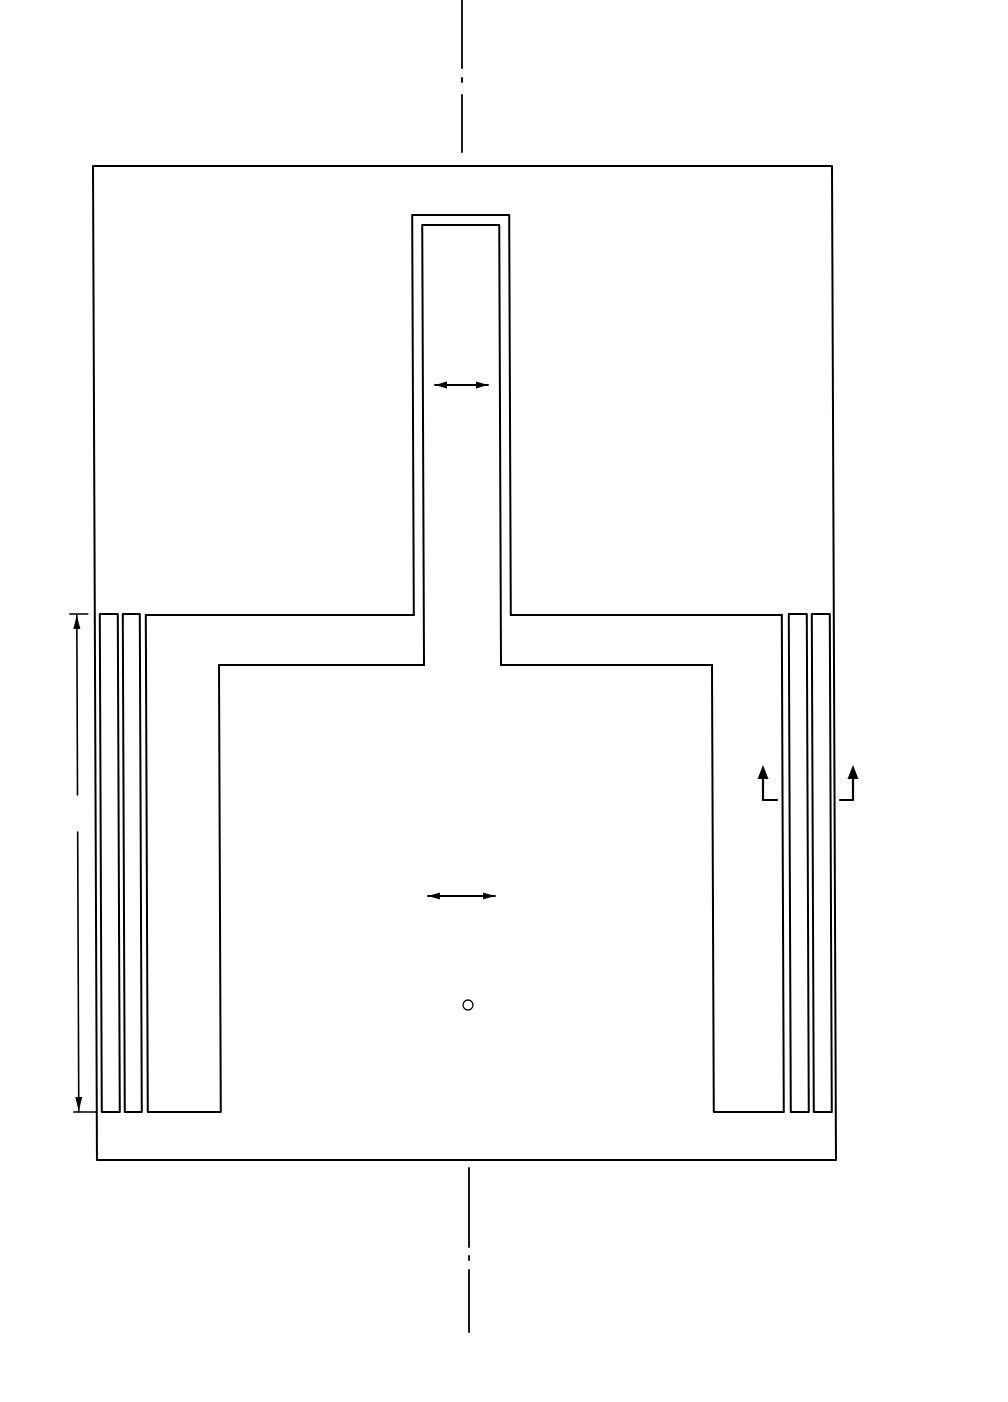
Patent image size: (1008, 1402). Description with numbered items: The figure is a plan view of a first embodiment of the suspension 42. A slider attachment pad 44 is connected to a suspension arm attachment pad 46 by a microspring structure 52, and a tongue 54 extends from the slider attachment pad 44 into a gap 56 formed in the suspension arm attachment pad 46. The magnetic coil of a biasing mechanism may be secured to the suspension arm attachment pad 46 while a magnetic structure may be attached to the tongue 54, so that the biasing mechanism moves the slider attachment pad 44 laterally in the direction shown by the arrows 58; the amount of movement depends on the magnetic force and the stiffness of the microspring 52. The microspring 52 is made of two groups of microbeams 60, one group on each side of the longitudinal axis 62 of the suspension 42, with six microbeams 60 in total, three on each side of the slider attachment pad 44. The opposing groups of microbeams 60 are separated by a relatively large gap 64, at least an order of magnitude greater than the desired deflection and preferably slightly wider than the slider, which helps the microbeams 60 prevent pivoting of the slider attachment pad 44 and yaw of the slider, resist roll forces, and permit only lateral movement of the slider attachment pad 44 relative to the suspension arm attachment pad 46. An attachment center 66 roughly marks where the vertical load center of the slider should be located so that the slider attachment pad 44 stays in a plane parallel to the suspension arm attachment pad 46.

The suspension 42 is at (849, 332).
The slider attachment pad 44 is at (393, 1065).
The suspension arm attachment pad 46 is at (680, 188).
The microspring structure 52 is at (862, 727).
The tongue 54 is at (464, 245).
The gap 56 is at (412, 242).
The arrows 58 is at (463, 387).
The microbeams 60 is at (832, 680).
The longitudinal axis 62 is at (465, 55).
The gap 64 is at (775, 622).
The attachment center 66 is at (474, 1004).